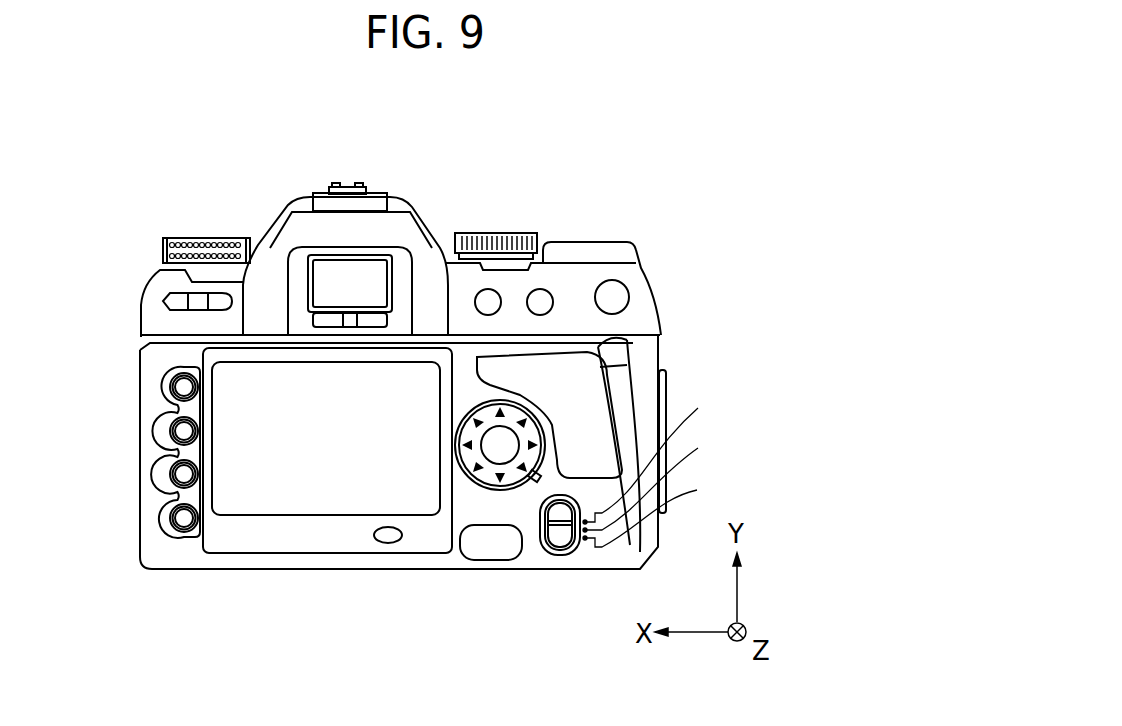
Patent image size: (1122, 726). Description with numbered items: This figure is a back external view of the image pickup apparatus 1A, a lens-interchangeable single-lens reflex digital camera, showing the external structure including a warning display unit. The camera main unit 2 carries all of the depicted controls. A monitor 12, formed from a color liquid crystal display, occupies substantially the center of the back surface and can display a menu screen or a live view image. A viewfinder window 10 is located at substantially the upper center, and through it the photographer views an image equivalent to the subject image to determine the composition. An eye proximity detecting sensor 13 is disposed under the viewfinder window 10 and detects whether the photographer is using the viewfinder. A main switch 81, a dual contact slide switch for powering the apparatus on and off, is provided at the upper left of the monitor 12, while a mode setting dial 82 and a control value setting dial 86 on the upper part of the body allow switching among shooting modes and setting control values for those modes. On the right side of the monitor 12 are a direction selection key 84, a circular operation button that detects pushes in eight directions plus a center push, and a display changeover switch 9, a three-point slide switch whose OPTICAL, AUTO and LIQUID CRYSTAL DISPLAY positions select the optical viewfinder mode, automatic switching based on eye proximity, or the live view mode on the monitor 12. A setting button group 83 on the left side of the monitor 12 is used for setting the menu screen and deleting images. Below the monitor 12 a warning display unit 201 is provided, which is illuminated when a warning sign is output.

The image pickup apparatus 1A is at (725, 145).
The camera main unit 2 is at (656, 348).
The display changeover switch 9 is at (553, 530).
The viewfinder window 10 is at (355, 277).
The monitor 12 is at (290, 490).
The eye proximity detecting sensor 13 is at (357, 315).
The main switch 81 is at (167, 310).
The mode setting dial 82 is at (497, 233).
The setting button group 83 is at (160, 362).
The direction selection key 84 is at (487, 491).
The control value setting dial 86 is at (209, 242).
The warning display unit 201 is at (388, 543).